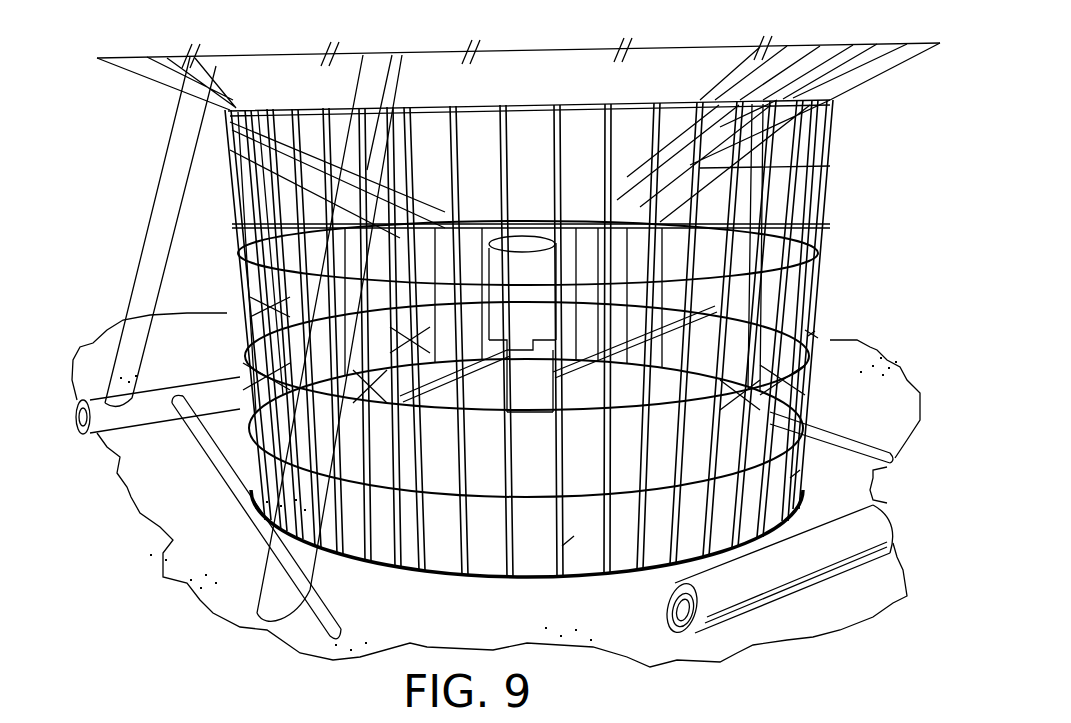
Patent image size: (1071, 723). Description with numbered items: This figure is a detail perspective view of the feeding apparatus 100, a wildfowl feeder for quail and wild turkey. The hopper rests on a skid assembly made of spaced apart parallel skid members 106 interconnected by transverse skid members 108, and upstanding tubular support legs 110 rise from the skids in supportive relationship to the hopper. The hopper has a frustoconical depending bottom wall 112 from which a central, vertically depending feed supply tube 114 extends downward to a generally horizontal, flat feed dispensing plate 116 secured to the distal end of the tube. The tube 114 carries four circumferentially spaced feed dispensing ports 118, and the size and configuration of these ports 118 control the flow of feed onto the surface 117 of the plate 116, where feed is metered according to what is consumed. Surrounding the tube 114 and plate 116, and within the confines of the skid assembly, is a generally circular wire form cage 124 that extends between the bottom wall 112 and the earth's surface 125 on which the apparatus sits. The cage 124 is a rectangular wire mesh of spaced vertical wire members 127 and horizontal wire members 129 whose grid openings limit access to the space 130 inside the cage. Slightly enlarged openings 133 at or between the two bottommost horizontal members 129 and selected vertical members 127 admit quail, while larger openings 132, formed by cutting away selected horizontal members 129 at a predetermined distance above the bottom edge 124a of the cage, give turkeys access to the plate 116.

The feeding apparatus 100 is at (861, 31).
The parallel skid members 106 is at (220, 380).
The transverse skid members 108 is at (226, 472).
The tubular support legs 110 is at (175, 162).
The frustoconical bottom wall 112 is at (847, 87).
The feed supply tube 114 is at (575, 262).
The feed dispensing plate 116 is at (556, 374).
The surface of feed dispensing plate 117 is at (462, 352).
The feed dispensing ports 118 is at (511, 358).
The wire form cage 124 is at (832, 170).
The bottom edge of cage 124a is at (440, 580).
The earth's surface 125 is at (815, 330).
The vertical wire members 127 is at (806, 246).
The horizontal wire members 129 is at (762, 352).
The space within cage 130 is at (624, 440).
The larger openings 132 is at (262, 292).
The slightly enlarged openings 133 is at (566, 542).